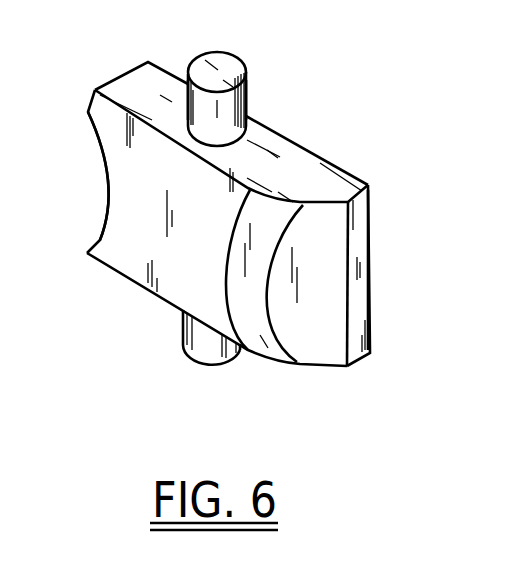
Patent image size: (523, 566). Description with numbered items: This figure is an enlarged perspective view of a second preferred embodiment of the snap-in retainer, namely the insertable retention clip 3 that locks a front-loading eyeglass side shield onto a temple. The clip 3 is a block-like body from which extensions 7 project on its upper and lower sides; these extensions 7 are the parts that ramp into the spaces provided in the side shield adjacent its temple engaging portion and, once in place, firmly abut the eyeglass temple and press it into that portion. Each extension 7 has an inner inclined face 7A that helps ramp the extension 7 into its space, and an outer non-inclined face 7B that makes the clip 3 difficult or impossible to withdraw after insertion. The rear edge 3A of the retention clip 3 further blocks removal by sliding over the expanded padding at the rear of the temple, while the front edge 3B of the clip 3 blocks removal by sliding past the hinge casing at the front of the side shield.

The retention clip 3 is at (137, 245).
The rear edge 3A is at (368, 281).
The front edge 3B is at (108, 193).
The extension 7 is at (244, 70).
The inner inclined face 7A is at (246, 112).
The outer non-inclined face 7B is at (183, 89).